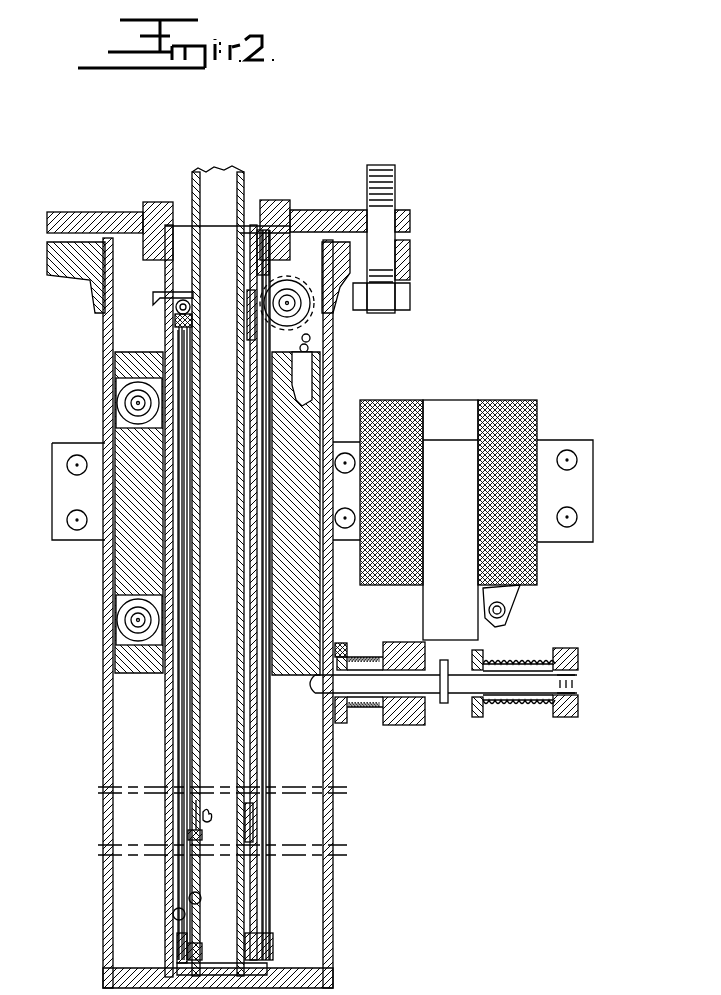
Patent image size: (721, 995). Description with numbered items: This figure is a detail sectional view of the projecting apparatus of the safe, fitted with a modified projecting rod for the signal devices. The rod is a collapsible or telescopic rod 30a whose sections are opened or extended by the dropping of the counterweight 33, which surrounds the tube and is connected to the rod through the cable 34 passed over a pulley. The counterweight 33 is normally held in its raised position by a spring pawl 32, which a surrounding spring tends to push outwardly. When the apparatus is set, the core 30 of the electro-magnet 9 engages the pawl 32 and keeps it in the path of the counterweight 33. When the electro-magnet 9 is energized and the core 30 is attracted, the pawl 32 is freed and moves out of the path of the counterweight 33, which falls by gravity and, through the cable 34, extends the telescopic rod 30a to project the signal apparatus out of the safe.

The telescopic projecting rod 30a is at (244, 186).
The electro-magnet 9 is at (518, 432).
The counterweight 33 is at (133, 550).
The cable 34 is at (196, 677).
The core 30 is at (433, 603).
The spring pawl 32 is at (470, 687).